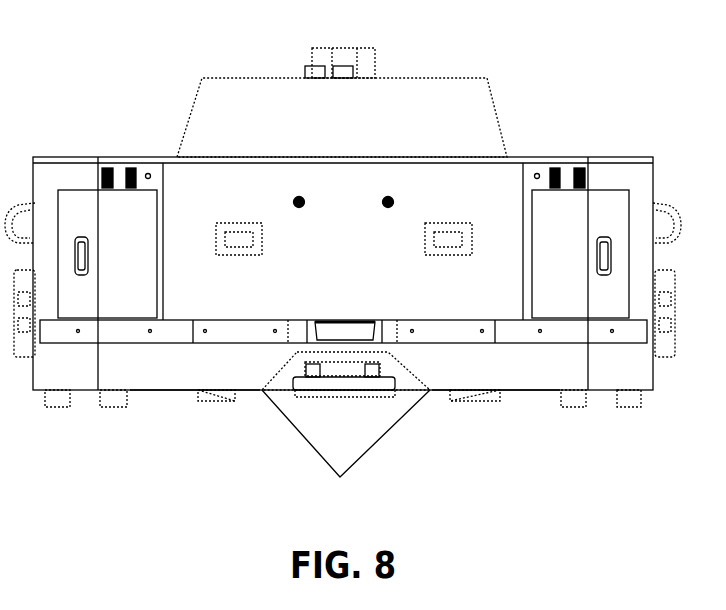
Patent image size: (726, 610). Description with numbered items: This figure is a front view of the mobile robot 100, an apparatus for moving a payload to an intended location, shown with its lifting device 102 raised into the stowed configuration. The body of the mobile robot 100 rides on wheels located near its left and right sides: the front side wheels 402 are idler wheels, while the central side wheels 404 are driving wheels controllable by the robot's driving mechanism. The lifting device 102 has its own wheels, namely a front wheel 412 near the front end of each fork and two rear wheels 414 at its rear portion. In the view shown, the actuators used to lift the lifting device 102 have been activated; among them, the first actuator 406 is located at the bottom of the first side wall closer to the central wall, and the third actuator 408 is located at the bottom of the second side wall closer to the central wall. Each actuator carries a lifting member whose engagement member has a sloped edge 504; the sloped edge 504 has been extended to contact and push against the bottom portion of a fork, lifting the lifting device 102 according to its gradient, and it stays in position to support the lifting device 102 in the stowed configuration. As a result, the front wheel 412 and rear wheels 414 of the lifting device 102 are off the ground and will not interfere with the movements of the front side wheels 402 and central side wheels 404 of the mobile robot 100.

The mobile robot 100 is at (547, 110).
The lifting device 102 is at (257, 412).
The front side wheels 402 is at (113, 405).
The central side wheels 404 is at (63, 405).
The first actuator 406 is at (197, 393).
The third actuator 408 is at (485, 398).
The front wheel 412 is at (346, 429).
The rear wheels 414 is at (344, 404).
The sloped edge 504 is at (223, 402).